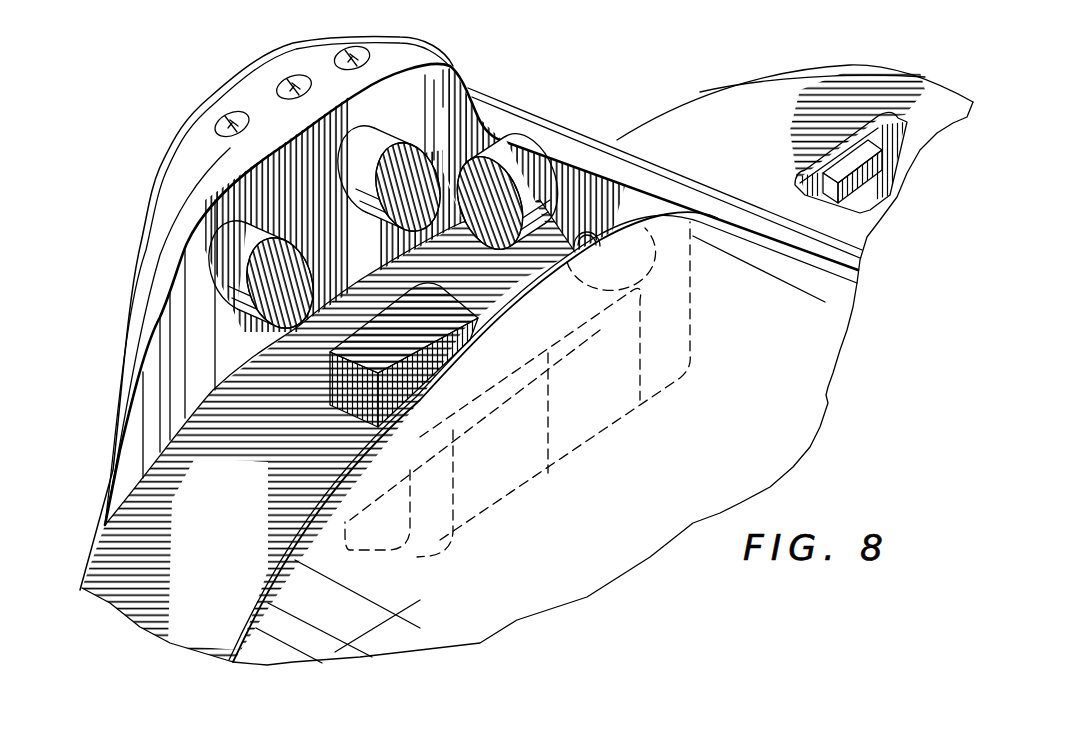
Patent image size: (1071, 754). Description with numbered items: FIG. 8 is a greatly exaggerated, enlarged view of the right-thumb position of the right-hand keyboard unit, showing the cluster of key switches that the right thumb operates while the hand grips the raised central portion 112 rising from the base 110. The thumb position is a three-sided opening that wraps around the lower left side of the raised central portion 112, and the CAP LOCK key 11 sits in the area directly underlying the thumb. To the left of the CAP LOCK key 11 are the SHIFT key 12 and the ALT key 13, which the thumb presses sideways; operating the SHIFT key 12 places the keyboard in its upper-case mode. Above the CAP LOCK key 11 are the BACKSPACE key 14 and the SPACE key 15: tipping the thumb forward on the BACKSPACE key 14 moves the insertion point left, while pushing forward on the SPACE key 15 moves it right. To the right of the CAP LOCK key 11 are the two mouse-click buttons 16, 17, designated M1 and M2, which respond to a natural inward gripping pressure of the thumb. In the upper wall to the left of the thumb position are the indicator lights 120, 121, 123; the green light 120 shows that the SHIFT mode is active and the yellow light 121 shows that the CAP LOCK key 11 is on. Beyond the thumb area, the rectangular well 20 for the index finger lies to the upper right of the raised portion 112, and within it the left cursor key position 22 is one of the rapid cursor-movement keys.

The CAP LOCK key 11 is at (360, 413).
The SHIFT key 12 is at (273, 236).
The ALT key 13 is at (360, 170).
The BACKSPACE key 14 is at (545, 203).
The SPACE key 15 is at (620, 200).
The operational key M1 16 is at (567, 318).
The operational key M2 17 is at (478, 395).
The finger position well 20 is at (910, 130).
The left cursor key position 22 is at (877, 190).
The base 110 is at (728, 100).
The raised central portion 112 is at (695, 463).
The green indicator light 120 is at (337, 53).
The yellow indicator light 121 is at (287, 85).
The aperture 123 is at (222, 120).